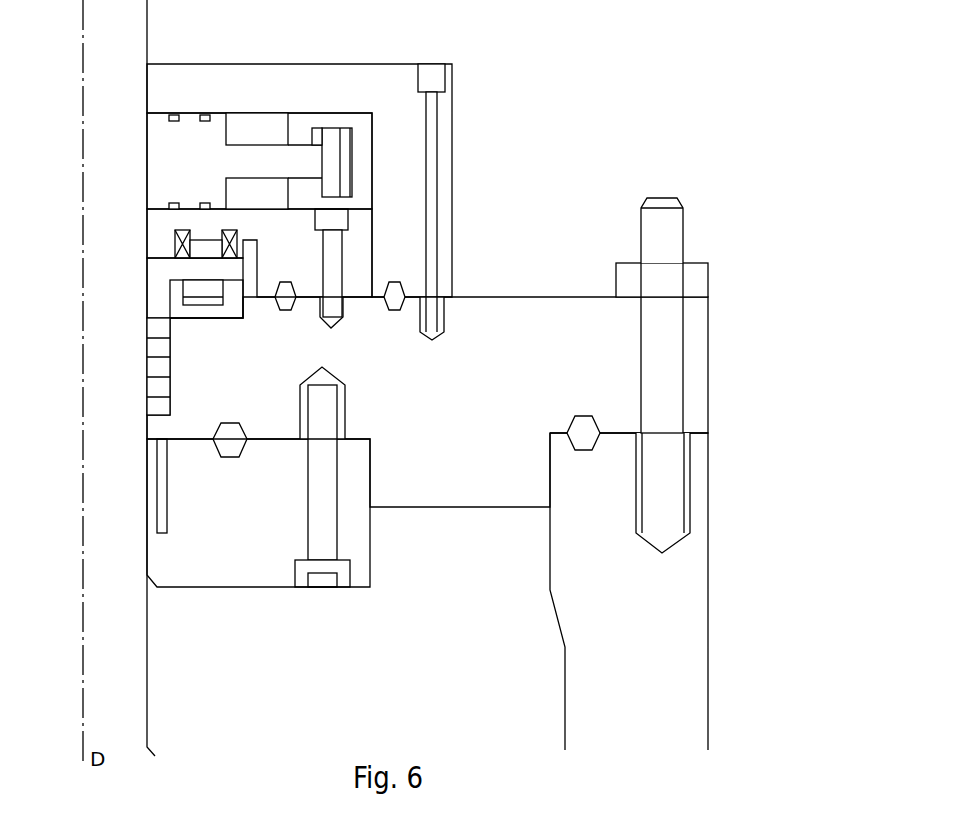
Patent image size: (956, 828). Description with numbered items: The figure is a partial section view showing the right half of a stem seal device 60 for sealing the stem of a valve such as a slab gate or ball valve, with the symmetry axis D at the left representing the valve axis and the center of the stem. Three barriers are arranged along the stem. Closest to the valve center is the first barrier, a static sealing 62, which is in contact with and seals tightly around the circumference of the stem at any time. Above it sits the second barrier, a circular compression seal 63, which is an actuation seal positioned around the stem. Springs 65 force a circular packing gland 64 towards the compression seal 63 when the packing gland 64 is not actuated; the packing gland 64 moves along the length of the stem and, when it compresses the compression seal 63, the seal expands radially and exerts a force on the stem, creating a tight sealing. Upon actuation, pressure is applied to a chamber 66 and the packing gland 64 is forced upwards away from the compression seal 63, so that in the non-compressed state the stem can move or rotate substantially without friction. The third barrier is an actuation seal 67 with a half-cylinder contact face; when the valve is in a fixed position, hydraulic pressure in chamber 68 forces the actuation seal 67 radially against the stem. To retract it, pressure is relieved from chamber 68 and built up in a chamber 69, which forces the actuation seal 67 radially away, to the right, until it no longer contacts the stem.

The stem seal device 60 is at (578, 97).
The sealing 62 is at (147, 487).
The compression seal 63 is at (147, 365).
The packing gland 64 is at (147, 290).
The springs 65 is at (175, 245).
The chamber 66 is at (208, 303).
The actuation seal 67 is at (147, 154).
The chamber 68 is at (347, 128).
The chamber 69 is at (316, 128).